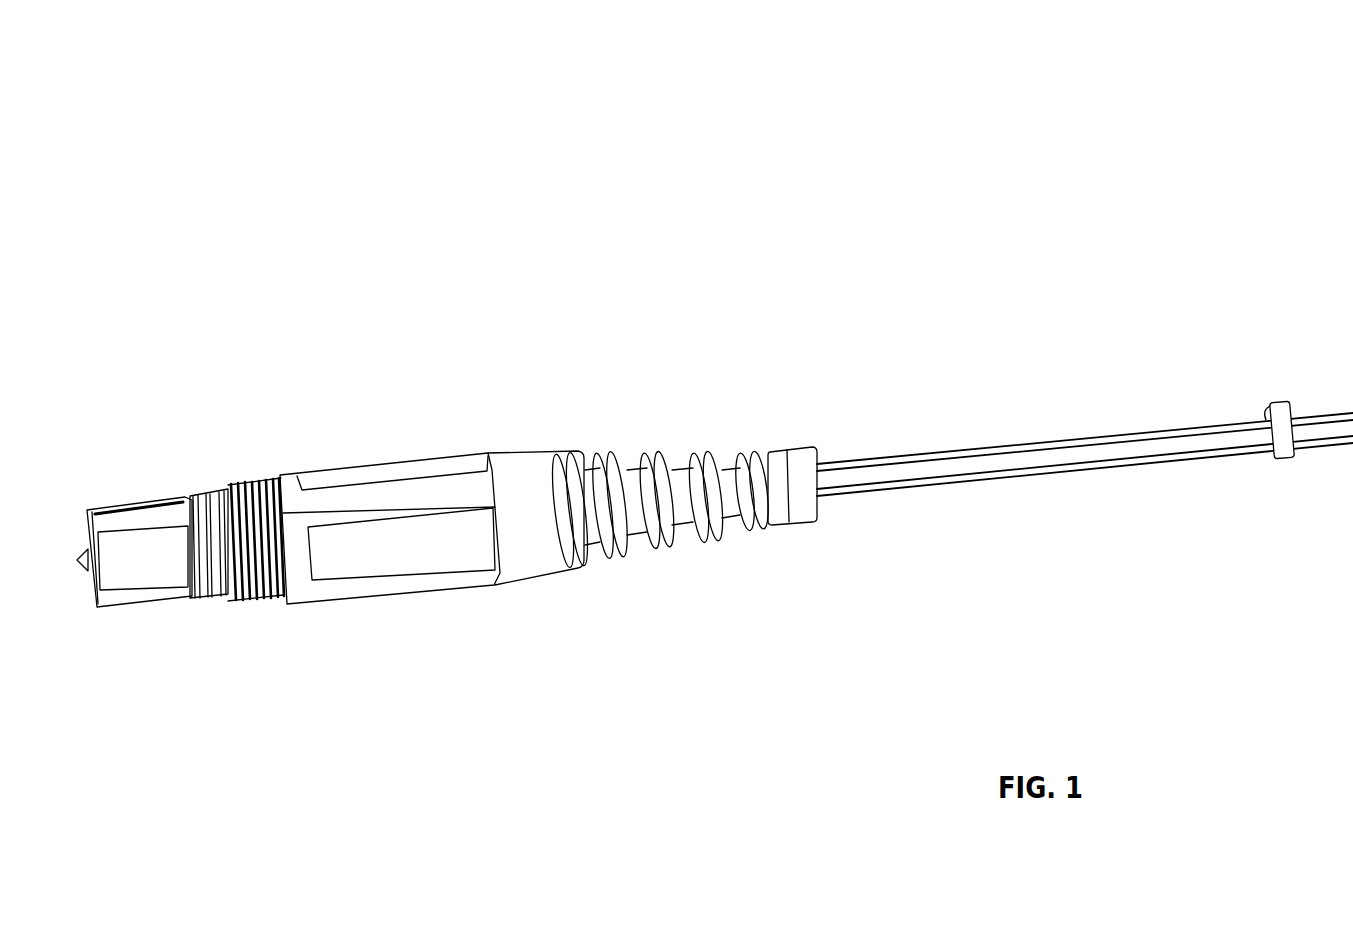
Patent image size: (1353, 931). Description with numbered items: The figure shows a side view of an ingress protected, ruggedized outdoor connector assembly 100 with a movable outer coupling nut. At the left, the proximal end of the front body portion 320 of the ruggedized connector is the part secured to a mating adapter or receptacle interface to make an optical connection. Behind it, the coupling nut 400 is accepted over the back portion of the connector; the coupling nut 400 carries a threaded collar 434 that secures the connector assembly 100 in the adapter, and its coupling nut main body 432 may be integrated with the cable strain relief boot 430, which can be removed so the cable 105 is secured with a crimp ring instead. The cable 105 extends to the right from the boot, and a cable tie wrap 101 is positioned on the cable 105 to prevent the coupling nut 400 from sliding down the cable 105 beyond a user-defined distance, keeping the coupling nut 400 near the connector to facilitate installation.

The connector assembly 100 is at (208, 226).
The front body portion 320 is at (160, 497).
The threaded collar 434 is at (262, 602).
The coupling nut 400 is at (412, 455).
The coupling nut main body 432 is at (425, 582).
The cable strain relief boot 430 is at (676, 460).
The cable 105 is at (998, 465).
The cable tie wrap 101 is at (1265, 408).